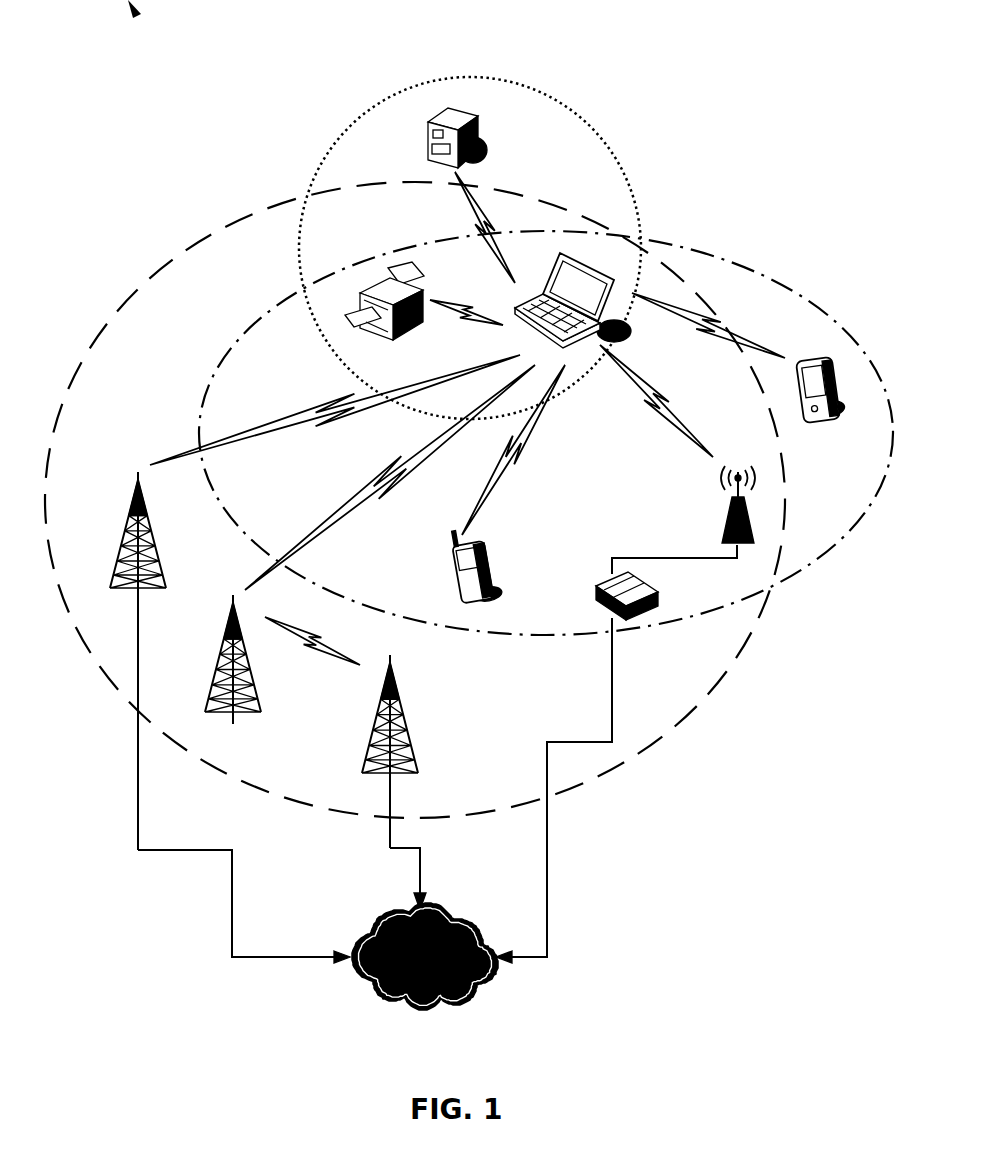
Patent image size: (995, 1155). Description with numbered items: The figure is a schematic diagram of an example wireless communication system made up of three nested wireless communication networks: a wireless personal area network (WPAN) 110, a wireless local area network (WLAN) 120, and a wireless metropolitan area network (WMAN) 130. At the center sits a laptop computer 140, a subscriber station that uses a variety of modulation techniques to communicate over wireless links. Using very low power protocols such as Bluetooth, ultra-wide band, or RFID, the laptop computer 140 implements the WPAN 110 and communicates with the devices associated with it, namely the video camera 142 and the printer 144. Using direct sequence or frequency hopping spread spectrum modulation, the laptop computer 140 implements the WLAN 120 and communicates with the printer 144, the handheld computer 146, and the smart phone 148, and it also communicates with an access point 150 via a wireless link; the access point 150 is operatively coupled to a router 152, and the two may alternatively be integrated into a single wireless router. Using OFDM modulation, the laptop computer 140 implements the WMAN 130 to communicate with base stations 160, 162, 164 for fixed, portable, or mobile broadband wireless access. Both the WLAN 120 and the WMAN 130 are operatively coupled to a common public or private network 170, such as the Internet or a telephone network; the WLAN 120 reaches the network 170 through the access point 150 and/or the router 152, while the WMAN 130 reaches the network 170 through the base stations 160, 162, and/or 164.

The wireless personal area network 110 is at (467, 76).
The wireless local area network 120 is at (186, 402).
The wireless metropolitan area network 130 is at (222, 213).
The laptop computer 140 is at (567, 253).
The video camera 142 is at (470, 140).
The printer 144 is at (397, 342).
The handheld computer 146 is at (813, 358).
The smart phone 148 is at (478, 558).
The access point 150 is at (728, 522).
The router 152 is at (607, 580).
The base station 160 is at (132, 525).
The base station 162 is at (225, 652).
The base station 164 is at (383, 717).
The common public or private network 170 is at (377, 925).